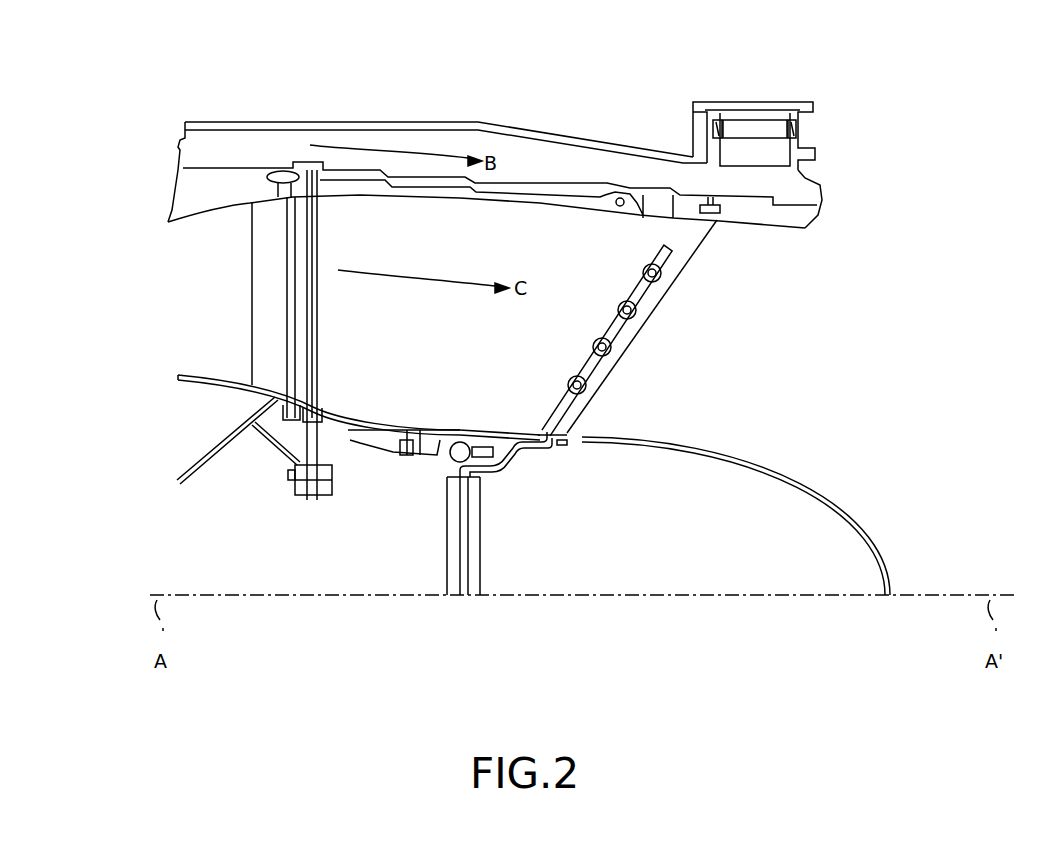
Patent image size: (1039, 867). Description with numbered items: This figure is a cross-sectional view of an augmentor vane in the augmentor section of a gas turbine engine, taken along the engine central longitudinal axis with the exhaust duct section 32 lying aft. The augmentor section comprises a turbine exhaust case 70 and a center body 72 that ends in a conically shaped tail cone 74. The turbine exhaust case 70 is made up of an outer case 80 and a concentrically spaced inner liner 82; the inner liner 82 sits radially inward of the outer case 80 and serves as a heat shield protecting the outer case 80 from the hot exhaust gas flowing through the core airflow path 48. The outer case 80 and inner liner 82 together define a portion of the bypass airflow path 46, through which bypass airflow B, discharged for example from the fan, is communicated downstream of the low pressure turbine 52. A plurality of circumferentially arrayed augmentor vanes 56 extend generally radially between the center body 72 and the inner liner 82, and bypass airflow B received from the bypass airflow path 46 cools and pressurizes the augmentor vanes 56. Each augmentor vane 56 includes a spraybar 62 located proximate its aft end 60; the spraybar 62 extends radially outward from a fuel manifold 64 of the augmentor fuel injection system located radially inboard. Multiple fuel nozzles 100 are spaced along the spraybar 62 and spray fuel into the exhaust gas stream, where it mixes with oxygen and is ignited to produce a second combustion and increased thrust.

The exhaust duct section 32 is at (893, 355).
The bypass airflow path 46 is at (242, 142).
The core airflow path 48 is at (205, 282).
The low pressure turbine 52 is at (130, 338).
The augmentor vanes 56 is at (438, 352).
The aft end 60 is at (663, 298).
The spraybar 62 is at (617, 335).
The fuel manifold 64 is at (446, 541).
The turbine exhaust case 70 is at (489, 106).
The center body 72 is at (361, 564).
The tail cone 74 is at (877, 542).
The outer case 80 is at (652, 158).
The inner liner 82 is at (810, 217).
The fuel nozzles 100 is at (663, 275).